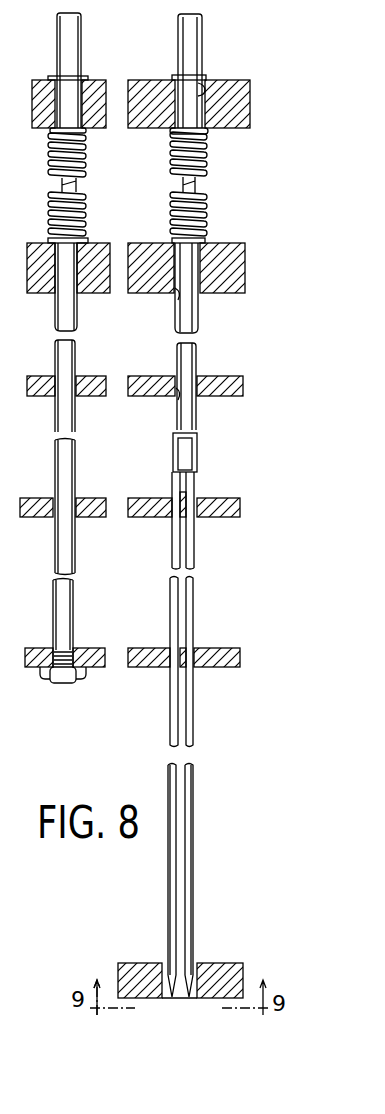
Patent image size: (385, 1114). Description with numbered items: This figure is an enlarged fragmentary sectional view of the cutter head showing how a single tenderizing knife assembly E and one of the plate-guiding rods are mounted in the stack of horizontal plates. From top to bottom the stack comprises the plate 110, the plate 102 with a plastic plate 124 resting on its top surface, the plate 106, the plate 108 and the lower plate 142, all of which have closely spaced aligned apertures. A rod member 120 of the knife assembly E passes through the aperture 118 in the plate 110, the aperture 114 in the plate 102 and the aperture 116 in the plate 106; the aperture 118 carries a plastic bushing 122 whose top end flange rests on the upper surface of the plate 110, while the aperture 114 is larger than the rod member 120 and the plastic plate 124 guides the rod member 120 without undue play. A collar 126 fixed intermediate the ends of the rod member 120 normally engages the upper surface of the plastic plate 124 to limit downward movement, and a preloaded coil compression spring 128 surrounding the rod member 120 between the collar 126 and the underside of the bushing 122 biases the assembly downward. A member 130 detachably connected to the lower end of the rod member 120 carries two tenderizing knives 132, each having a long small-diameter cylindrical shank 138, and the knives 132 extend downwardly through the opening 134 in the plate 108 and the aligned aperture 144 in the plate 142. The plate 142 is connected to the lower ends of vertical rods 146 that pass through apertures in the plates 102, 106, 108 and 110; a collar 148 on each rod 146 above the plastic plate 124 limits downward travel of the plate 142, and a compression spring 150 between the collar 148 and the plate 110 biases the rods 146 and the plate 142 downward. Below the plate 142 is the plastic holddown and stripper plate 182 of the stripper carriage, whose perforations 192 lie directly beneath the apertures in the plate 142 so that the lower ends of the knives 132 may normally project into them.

The horizontal plate 102 is at (246, 272).
The horizontal plate 106 is at (158, 376).
The horizontal plate 108 is at (155, 498).
The horizontal plate 110 is at (250, 102).
The aperture 114 is at (180, 293).
The aperture 116 is at (178, 396).
The aperture 118 is at (205, 91).
The rod member 120 is at (197, 359).
The plastic bushing 122 is at (178, 78).
The plastic plate 124 is at (170, 242).
The collar 126 is at (206, 240).
The compression spring 128 is at (207, 172).
The member 130 is at (192, 486).
The tenderizing knife 132 is at (190, 852).
The opening 134 is at (182, 515).
The shank 138 is at (196, 544).
The horizontal plate 142 is at (200, 656).
The aperture 144 is at (178, 656).
The rod 146 is at (55, 418).
The collar 148 is at (86, 226).
The compression spring 150 is at (86, 161).
The plate 182 is at (140, 963).
The perforation 192 is at (195, 966).
The knife assembly E is at (199, 602).